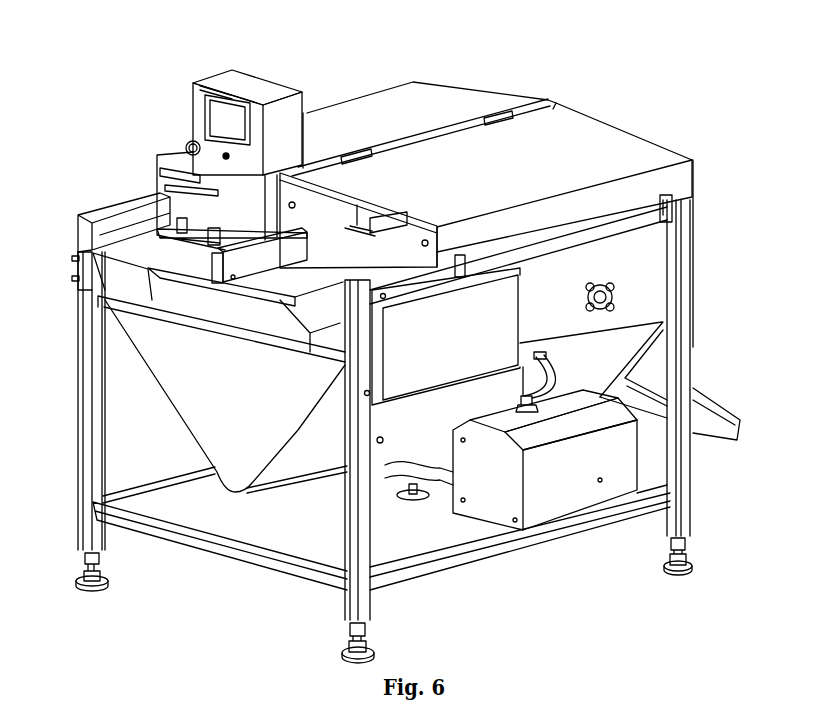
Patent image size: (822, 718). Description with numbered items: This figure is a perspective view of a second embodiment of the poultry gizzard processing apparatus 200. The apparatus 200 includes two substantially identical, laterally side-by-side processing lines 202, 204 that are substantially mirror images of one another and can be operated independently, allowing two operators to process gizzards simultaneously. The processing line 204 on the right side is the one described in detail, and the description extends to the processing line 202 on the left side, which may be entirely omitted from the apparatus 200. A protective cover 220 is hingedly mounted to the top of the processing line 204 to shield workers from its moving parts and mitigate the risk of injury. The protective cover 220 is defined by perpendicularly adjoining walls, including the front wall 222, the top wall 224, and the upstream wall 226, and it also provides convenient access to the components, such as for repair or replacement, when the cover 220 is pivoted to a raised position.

The poultry gizzard processing apparatus 200 is at (105, 104).
The processing line 202 is at (124, 276).
The processing line 204 is at (309, 321).
The protective cover 220 is at (632, 131).
The front wall 222 is at (678, 183).
The top wall 224 is at (550, 163).
The upstream wall 226 is at (330, 210).